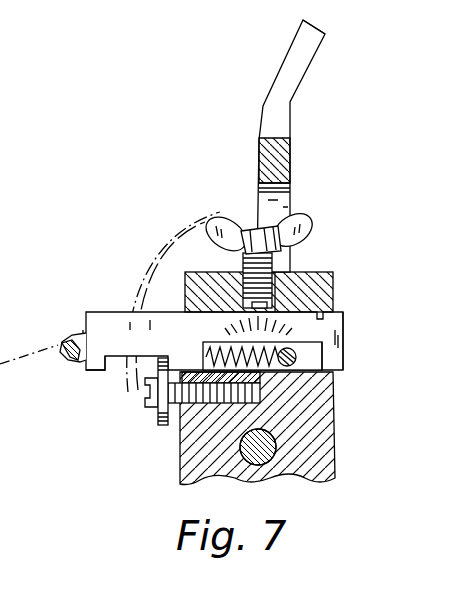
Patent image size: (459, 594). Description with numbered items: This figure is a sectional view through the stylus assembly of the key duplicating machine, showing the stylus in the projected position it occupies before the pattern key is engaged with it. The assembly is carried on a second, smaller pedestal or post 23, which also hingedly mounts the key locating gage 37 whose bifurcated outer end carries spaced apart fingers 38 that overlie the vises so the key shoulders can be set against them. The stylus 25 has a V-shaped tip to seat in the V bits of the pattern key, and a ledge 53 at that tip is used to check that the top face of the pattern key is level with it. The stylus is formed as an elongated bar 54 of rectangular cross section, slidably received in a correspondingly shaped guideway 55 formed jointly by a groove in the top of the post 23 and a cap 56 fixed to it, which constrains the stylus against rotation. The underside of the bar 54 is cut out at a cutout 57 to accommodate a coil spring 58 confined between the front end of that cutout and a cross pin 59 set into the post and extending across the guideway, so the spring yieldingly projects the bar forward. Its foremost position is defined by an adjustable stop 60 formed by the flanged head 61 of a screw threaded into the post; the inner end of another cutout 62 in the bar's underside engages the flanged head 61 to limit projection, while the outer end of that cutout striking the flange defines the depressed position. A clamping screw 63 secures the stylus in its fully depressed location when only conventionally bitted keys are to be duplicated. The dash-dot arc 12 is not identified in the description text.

The circular saw blade 12 is at (160, 246).
The pedestal or post 23 is at (332, 428).
The stylus 25 is at (123, 318).
The key locating gage 37 is at (264, 82).
The fingers 38 is at (320, 37).
The ledge 53 is at (82, 333).
The elongated bar 54 is at (170, 320).
The guideway 55 is at (345, 316).
The cap 56 is at (327, 272).
The cutout 57 is at (314, 378).
The coil spring 58 is at (318, 378).
The cross pin 59 is at (297, 356).
The adjustable stop 60 is at (135, 421).
The flanged head 61 is at (160, 428).
The cutout 62 is at (117, 362).
The clamping screw 63 is at (296, 228).